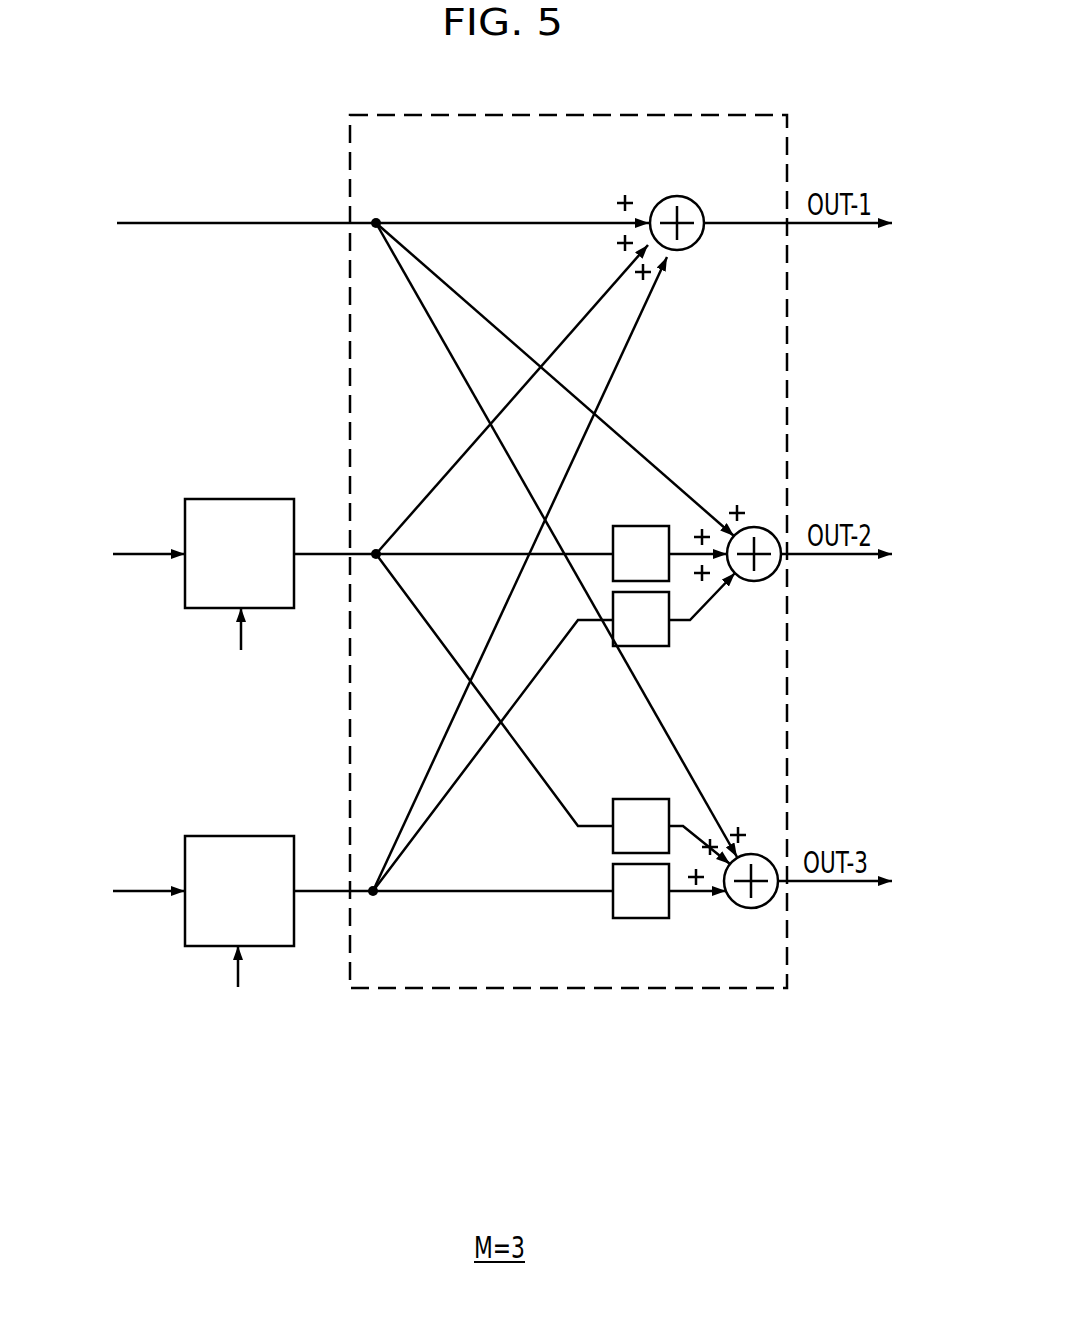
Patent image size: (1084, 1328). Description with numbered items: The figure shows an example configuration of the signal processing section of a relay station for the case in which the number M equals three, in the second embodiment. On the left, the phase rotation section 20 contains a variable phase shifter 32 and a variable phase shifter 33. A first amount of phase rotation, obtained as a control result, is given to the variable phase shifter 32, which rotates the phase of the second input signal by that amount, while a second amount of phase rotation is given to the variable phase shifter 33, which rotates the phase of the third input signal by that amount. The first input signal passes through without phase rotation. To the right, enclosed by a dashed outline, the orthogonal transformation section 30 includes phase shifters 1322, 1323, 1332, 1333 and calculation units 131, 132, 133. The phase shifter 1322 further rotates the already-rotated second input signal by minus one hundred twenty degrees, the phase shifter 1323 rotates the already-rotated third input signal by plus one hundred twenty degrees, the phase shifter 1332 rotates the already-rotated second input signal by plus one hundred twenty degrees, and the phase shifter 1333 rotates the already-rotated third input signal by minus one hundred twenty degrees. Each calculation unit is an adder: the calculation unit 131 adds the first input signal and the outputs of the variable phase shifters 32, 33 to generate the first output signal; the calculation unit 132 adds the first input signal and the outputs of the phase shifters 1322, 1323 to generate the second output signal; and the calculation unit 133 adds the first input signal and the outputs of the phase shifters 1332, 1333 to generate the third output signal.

The phase rotation section 20 is at (297, 1078).
The orthogonal transformation section 30 is at (570, 1078).
The variable phase shifter 32 is at (240, 499).
The variable phase shifter 33 is at (240, 836).
The calculation unit 131 is at (683, 197).
The calculation unit 132 is at (757, 527).
The calculation unit 133 is at (755, 854).
The phase shifter 1322 is at (650, 526).
The phase shifter 1323 is at (645, 646).
The phase shifter 1332 is at (630, 799).
The phase shifter 1333 is at (640, 918).